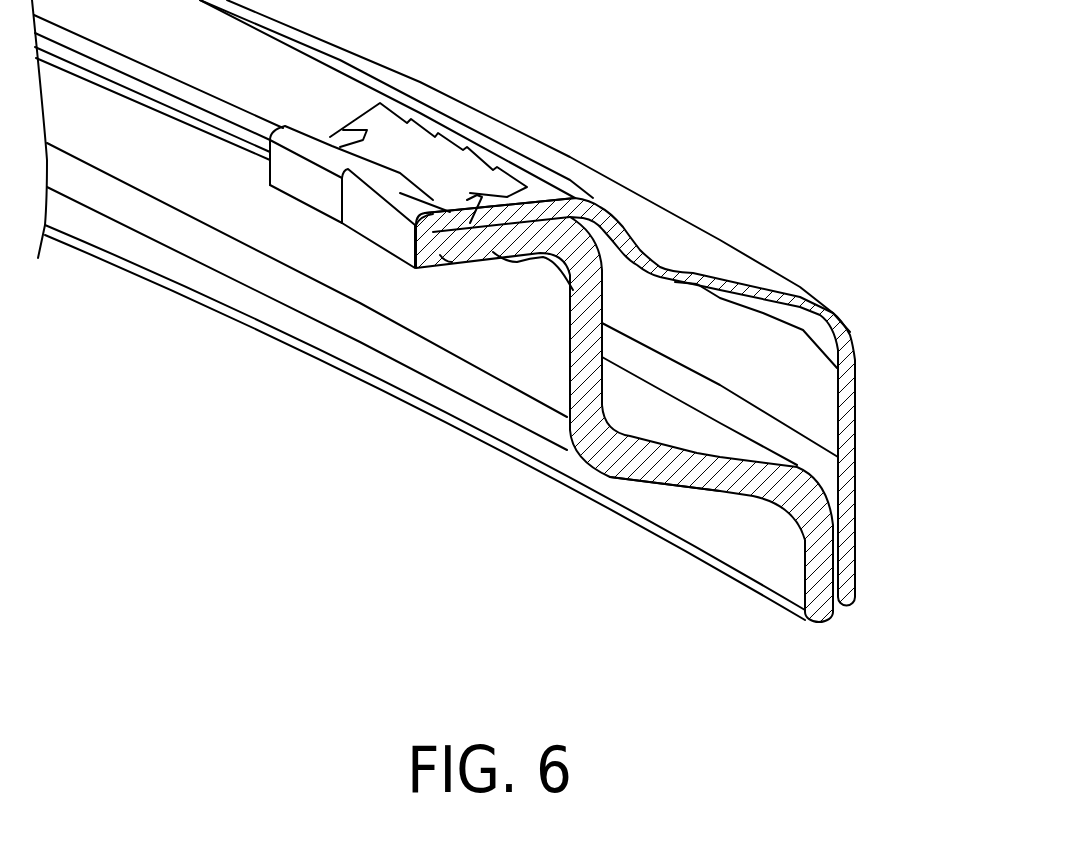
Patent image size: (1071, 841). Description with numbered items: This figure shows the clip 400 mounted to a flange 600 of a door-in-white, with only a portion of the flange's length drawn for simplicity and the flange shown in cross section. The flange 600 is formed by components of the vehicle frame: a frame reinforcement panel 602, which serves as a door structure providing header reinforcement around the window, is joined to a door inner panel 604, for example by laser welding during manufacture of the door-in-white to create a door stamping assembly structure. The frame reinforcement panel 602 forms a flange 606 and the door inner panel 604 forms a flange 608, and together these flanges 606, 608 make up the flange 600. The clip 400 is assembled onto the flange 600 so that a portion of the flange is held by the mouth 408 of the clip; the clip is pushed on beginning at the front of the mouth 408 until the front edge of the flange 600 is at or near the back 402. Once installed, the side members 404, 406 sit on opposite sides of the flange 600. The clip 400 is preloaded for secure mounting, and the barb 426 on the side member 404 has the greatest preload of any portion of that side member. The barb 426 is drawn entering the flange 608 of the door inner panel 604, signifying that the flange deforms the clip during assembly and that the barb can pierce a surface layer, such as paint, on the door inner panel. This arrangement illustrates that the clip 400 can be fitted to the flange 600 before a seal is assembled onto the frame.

The flange 600 is at (200, 122).
The clip 400 is at (362, 238).
The back 402 is at (310, 185).
The side member 404 is at (333, 147).
The side member 406 is at (442, 262).
The mouth 408 is at (546, 236).
The barb 426 is at (458, 236).
The frame reinforcement panel 602 is at (680, 486).
The door inner panel 604 is at (853, 322).
The flange 606 is at (557, 280).
The flange 608 is at (433, 202).